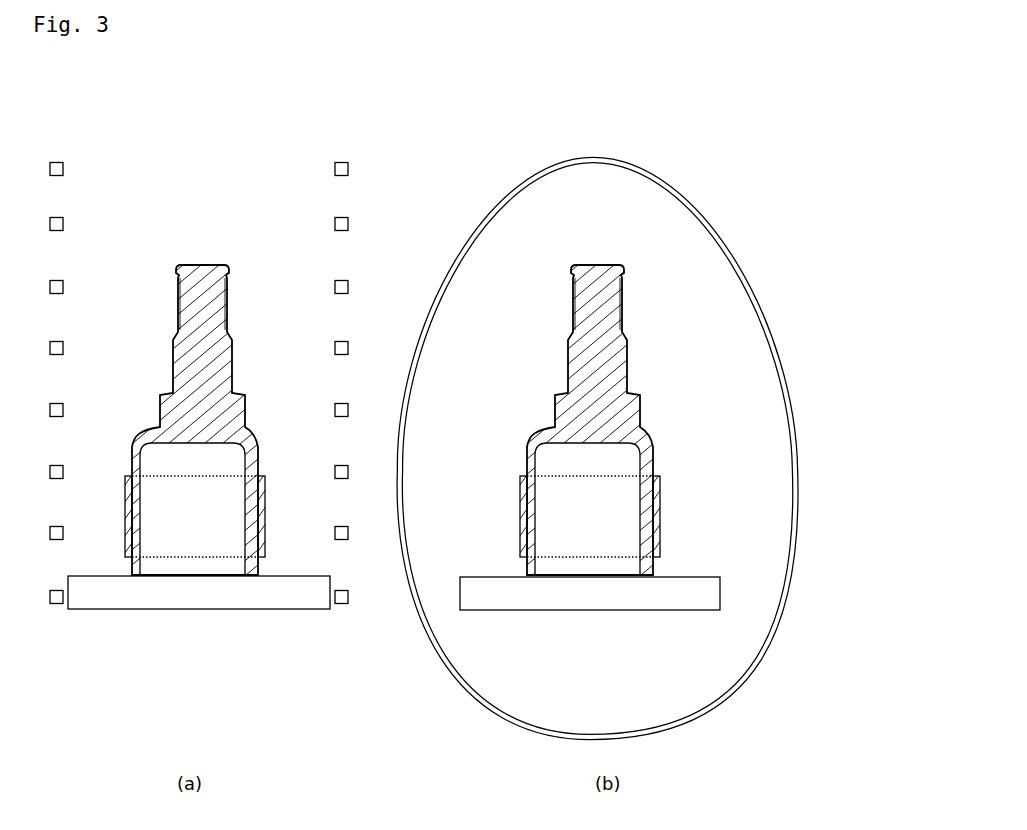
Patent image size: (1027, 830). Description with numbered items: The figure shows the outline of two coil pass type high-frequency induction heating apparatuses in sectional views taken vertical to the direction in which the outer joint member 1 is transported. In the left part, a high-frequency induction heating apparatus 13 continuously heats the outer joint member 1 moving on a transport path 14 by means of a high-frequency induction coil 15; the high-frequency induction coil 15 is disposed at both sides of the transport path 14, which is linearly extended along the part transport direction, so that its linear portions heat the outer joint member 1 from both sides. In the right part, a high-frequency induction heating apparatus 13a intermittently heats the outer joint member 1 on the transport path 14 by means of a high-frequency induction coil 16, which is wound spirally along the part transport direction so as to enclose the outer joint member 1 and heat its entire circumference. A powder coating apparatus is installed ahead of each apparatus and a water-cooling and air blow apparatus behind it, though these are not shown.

The outer joint member 1 is at (261, 306).
The high-frequency induction heating apparatus 13 is at (242, 361).
The high-frequency induction heating apparatus 13a is at (598, 430).
The transport path 14 is at (192, 597).
The high-frequency induction coil 15 is at (63, 224).
The high-frequency induction coil 16 is at (716, 230).